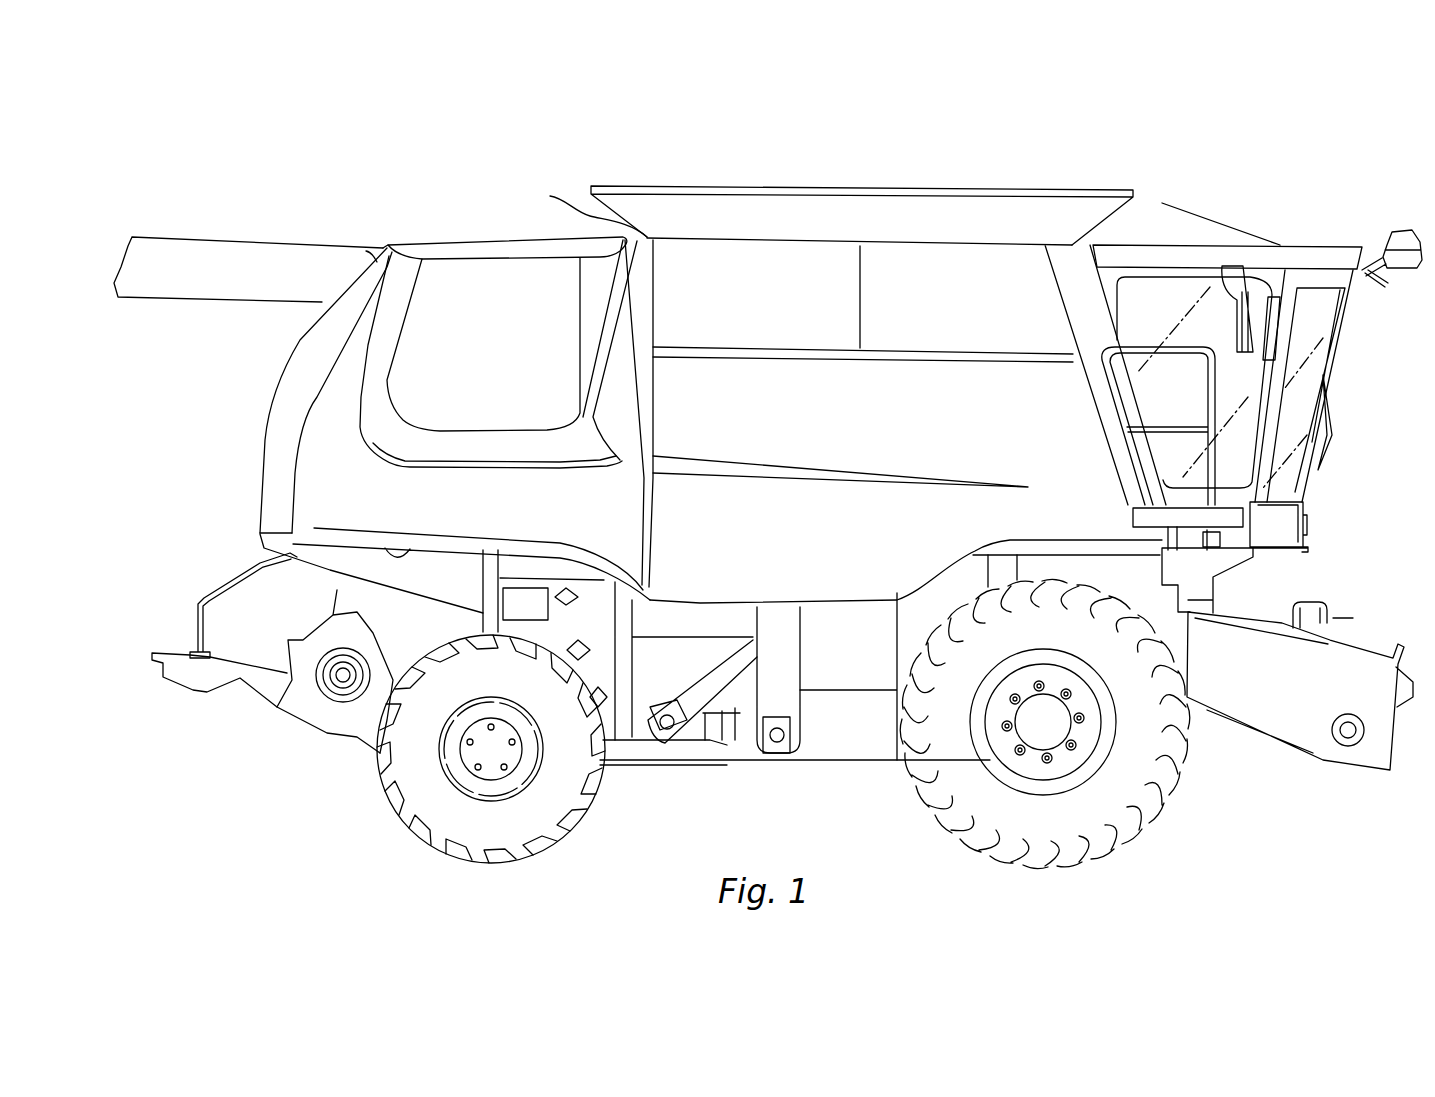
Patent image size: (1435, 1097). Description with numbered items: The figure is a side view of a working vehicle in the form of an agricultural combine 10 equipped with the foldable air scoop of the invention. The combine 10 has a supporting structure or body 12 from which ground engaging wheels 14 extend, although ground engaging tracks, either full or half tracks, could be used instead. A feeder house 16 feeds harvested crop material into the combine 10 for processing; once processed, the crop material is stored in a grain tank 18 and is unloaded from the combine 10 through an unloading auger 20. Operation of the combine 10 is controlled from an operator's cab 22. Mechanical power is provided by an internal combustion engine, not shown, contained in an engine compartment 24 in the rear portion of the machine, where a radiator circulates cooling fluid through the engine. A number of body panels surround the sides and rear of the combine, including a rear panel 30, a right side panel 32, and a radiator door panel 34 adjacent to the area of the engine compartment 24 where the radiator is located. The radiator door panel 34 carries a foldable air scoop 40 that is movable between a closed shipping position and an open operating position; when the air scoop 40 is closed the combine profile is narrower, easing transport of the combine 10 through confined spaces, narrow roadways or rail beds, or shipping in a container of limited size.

The agricultural combine 10 is at (778, 147).
The body 12 is at (835, 740).
The ground engaging wheels 14 is at (570, 797).
The feeder house 16 is at (1277, 720).
The grain tank 18 is at (972, 207).
The unloading auger 20 is at (204, 253).
The operator's cab 22 is at (1188, 390).
The engine compartment 24 is at (573, 202).
The rear panel 30 is at (286, 396).
The right side panel 32 is at (978, 438).
The radiator door panel 34 is at (377, 260).
The foldable air scoop 40 is at (507, 283).